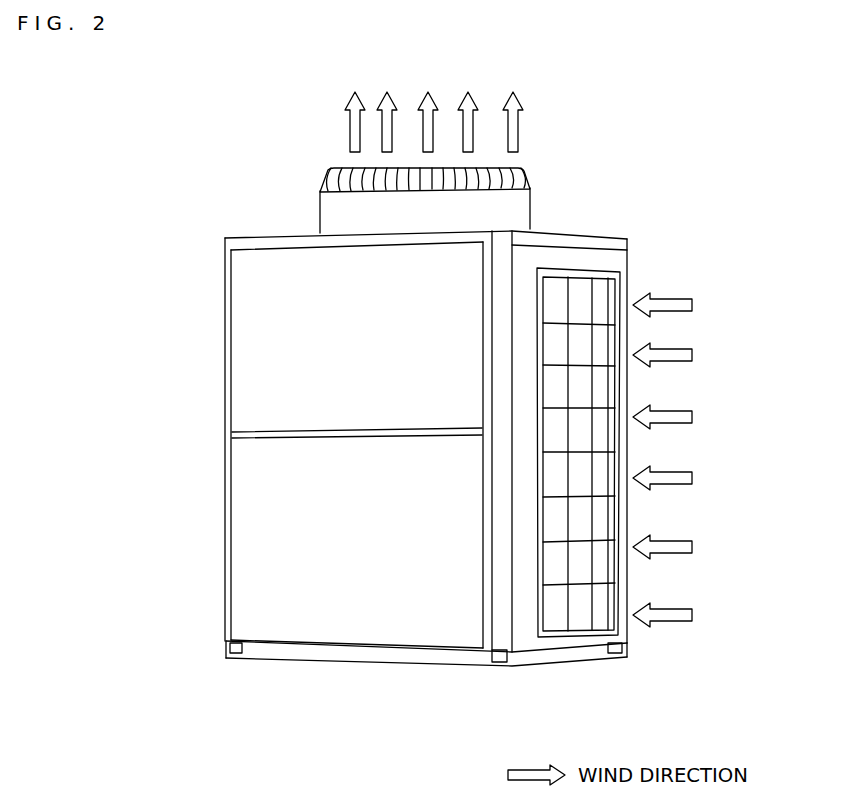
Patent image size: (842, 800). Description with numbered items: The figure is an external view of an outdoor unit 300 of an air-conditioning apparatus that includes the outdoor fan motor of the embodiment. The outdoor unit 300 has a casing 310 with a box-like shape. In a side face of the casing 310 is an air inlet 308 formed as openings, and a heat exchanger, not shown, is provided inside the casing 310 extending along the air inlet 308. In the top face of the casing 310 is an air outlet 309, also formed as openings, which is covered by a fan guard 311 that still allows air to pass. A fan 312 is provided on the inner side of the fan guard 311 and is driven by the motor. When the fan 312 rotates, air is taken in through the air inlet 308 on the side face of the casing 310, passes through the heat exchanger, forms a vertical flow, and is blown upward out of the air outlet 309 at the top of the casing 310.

The outdoor unit 300 is at (268, 195).
The air inlet 308 is at (573, 612).
The air outlet 309 is at (339, 167).
The casing 310 is at (273, 325).
The fan guard 311 is at (530, 175).
The fan 312 is at (457, 184).